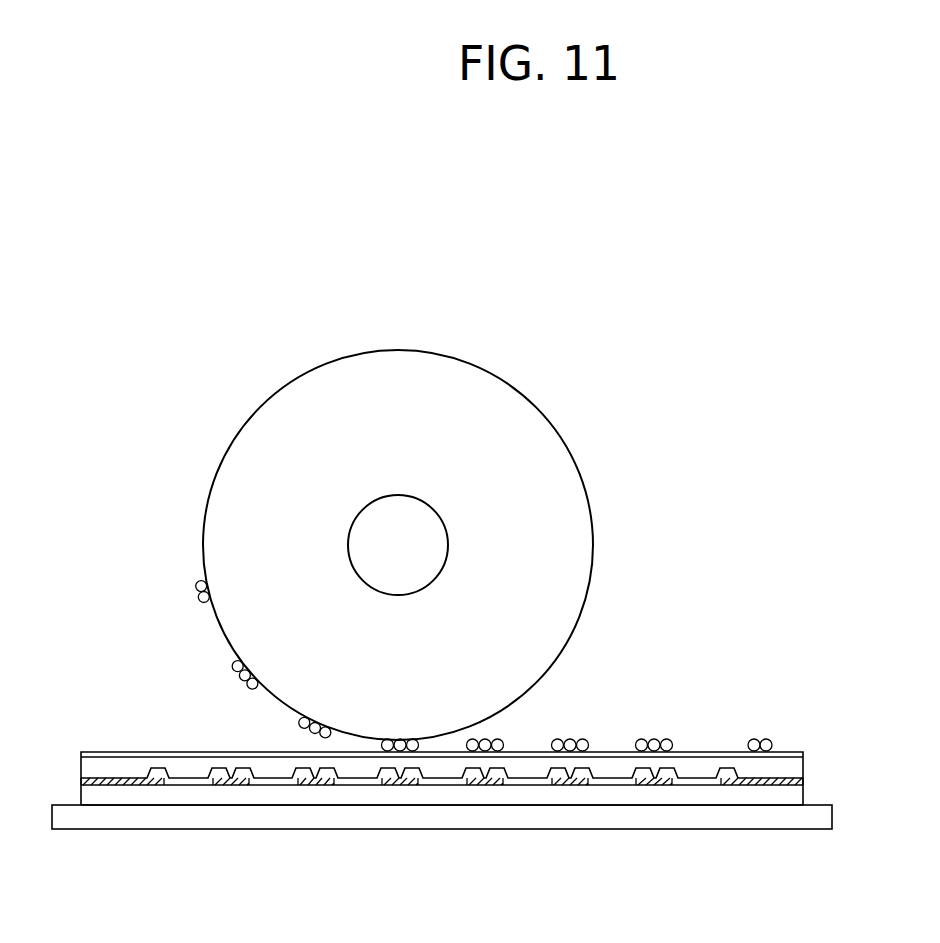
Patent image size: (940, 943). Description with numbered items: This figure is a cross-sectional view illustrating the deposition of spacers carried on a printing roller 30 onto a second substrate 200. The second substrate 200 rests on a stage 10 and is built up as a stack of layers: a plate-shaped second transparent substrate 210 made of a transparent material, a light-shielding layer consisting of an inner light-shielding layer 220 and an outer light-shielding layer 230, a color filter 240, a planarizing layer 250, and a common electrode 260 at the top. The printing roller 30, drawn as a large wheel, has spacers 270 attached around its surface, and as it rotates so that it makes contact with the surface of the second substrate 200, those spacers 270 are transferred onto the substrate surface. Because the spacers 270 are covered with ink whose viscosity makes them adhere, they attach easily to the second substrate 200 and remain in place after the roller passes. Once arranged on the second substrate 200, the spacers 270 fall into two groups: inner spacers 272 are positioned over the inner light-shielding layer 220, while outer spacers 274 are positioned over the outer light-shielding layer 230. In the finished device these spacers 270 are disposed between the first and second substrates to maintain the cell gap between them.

The stage 10 is at (822, 817).
The printing roller 30 is at (582, 540).
The second substrate 200 is at (464, 873).
The second transparent substrate 210 is at (165, 797).
The inner light-shielding layer 220 is at (228, 787).
The outer light-shielding layer 230 is at (108, 785).
The color filter 240 is at (283, 787).
The planarizing layer 250 is at (356, 763).
The common electrode 260 is at (439, 753).
The spacers 270 is at (777, 678).
The inner spacers 272 is at (653, 742).
The outer spacers 274 is at (753, 743).